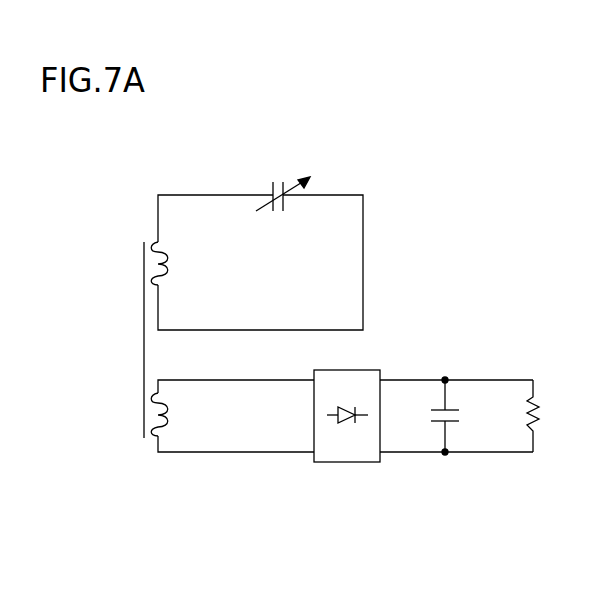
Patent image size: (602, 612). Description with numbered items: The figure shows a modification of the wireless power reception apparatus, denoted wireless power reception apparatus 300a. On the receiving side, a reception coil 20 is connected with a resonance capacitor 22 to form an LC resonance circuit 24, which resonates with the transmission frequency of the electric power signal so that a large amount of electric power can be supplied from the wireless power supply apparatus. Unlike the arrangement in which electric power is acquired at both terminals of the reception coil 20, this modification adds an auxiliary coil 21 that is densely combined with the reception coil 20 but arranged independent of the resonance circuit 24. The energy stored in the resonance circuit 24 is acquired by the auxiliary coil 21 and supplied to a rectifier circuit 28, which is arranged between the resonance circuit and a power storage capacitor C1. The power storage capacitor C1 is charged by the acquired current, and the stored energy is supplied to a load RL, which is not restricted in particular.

The reception coil 20 is at (153, 238).
The auxiliary coil 21 is at (153, 441).
The resonance capacitor 22 is at (270, 187).
The resonance circuit 24 is at (232, 140).
The rectifier circuit 28 is at (348, 464).
The power storage capacitor C1 is at (462, 418).
The load RL is at (540, 418).
The wireless power reception apparatus 300a is at (388, 588).